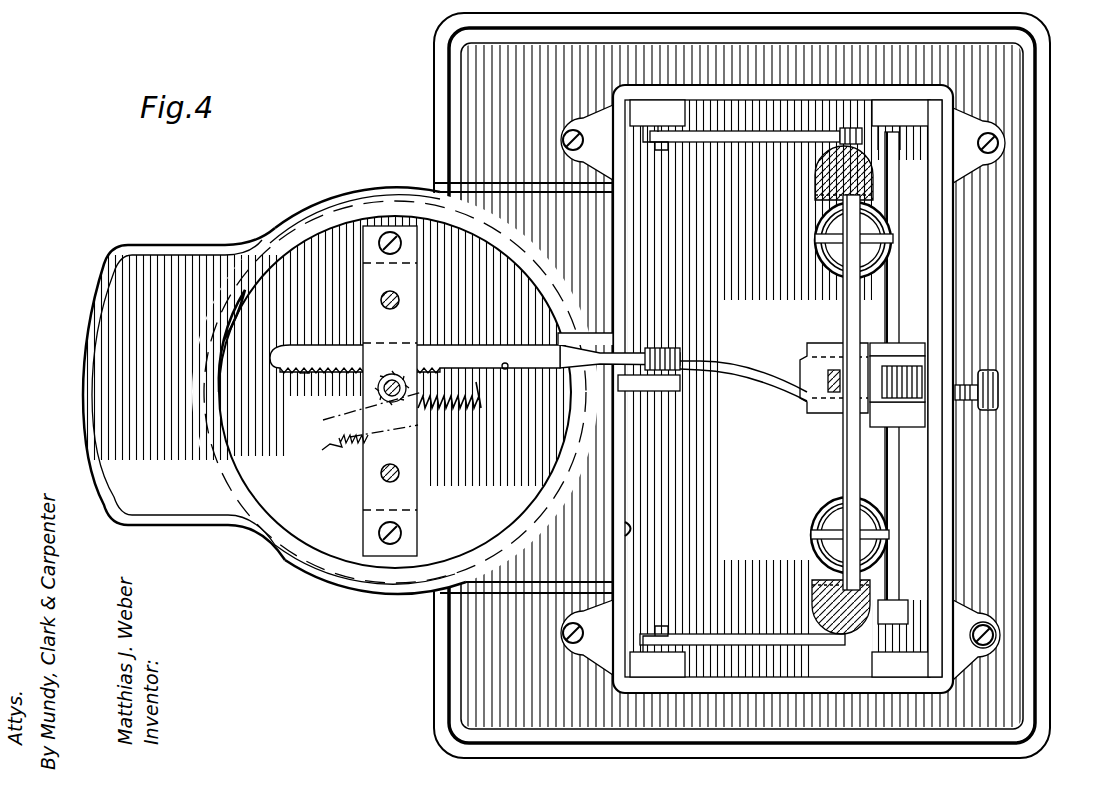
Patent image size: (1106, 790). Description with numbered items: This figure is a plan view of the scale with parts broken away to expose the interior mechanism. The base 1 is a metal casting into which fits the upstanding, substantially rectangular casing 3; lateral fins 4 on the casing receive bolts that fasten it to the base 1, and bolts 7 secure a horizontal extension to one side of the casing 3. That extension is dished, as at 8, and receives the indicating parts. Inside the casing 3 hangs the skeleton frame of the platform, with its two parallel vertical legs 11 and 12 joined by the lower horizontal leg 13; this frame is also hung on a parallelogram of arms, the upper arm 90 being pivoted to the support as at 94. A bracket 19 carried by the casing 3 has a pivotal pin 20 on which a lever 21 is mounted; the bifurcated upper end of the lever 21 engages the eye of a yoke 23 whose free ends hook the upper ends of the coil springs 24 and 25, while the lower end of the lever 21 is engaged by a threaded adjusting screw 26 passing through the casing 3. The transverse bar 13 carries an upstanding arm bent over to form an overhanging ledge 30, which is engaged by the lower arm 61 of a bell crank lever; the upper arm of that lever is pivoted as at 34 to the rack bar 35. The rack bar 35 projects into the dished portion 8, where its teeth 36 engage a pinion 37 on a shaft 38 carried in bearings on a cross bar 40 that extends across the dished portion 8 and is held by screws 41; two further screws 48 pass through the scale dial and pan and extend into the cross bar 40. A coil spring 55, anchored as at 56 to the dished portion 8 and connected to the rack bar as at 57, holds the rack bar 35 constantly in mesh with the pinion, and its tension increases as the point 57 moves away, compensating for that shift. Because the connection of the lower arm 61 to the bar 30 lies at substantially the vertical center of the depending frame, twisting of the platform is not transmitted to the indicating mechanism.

The base 1 is at (1045, 508).
The casing 3 is at (943, 491).
The lateral fins 4 is at (998, 622).
The bolts 7 is at (632, 528).
The dished portion 8 is at (272, 516).
The vertical leg 11 is at (812, 600).
The vertical leg 12 is at (864, 140).
The lower horizontal leg 13 is at (930, 480).
The bracket 19 is at (908, 432).
The pivotal pin 20 is at (895, 350).
The lever 21 is at (908, 385).
The yoke 23 is at (843, 300).
The coil spring 24 is at (812, 514).
The coil spring 25 is at (820, 262).
The threaded adjusting screw 26 is at (1000, 372).
The overhanging ledge 30 is at (820, 385).
The pivot 34 is at (650, 392).
The rack bar 35 is at (475, 345).
The teeth 36 is at (305, 376).
The pinion 37 is at (318, 425).
The shaft 38 is at (398, 380).
The cross bar 40 is at (375, 283).
The screws 41 is at (387, 543).
The screws 48 is at (399, 298).
The coil spring 55 is at (470, 395).
The anchor point 56 is at (338, 448).
The connection point 57 is at (508, 362).
The lower arm of bell crank lever 61 is at (762, 373).
The upper arm 90 is at (760, 131).
The pivotal mounting point 94 is at (652, 140).